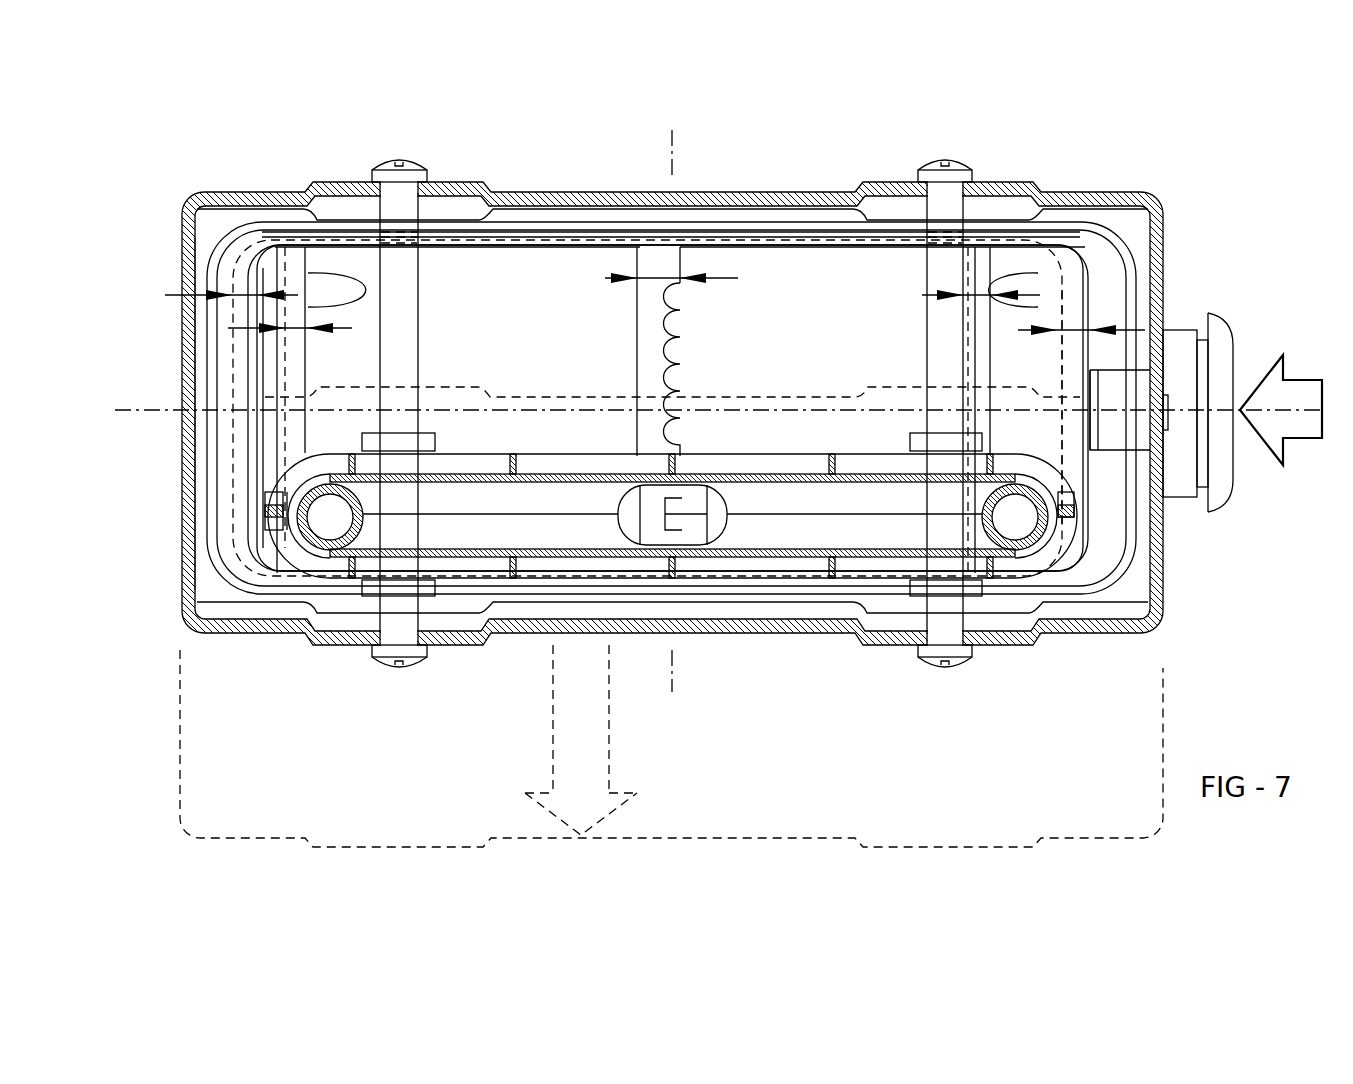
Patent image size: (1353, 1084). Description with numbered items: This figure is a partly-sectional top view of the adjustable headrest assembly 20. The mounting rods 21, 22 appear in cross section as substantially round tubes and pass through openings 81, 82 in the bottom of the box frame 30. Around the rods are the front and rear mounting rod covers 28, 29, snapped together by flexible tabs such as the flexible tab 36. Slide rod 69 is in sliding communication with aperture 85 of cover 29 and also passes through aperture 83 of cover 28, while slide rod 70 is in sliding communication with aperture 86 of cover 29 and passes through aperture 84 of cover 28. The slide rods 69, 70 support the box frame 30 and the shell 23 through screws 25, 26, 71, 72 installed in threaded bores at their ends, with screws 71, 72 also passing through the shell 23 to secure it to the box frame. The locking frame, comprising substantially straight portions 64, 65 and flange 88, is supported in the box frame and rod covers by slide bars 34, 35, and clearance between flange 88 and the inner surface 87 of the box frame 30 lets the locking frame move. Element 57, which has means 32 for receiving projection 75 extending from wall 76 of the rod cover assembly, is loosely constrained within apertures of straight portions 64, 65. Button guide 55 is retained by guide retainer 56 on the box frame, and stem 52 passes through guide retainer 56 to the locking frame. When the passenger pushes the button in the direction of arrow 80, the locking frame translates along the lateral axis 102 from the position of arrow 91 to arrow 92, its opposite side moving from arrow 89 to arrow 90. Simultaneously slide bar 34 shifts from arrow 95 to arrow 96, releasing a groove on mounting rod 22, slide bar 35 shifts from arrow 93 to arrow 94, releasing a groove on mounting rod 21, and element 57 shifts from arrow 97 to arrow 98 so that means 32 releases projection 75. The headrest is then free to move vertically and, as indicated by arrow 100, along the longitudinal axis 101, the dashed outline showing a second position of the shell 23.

The headrest assembly 20 is at (806, 179).
The mounting rod 21 is at (380, 521).
The mounting rod 22 is at (985, 491).
The shell 23 is at (563, 191).
The screw 25 is at (410, 664).
The screw 26 is at (933, 664).
The front mounting rod cover 28 is at (543, 548).
The rear mounting rod cover 29 is at (556, 490).
The box frame 30 is at (521, 208).
The means for receiving 32 is at (681, 344).
The slide bar 34 is at (1012, 252).
The slide bar 35 is at (310, 263).
The flexible tab 36 is at (272, 490).
The stem 52 is at (1105, 452).
The button guide 55 is at (1212, 513).
The guide retainer 56 is at (1180, 498).
The element 57 is at (690, 271).
The substantially straight portion 64 is at (502, 246).
The substantially straight portion 65 is at (815, 590).
The slide rod 69 is at (420, 311).
The slide rod 70 is at (927, 273).
The screw 71 is at (380, 168).
The screw 72 is at (965, 169).
The projection 75 is at (697, 500).
The wall 76 is at (710, 529).
The arrow 80 is at (1298, 381).
The opening 81 is at (366, 378).
The opening 82 is at (1055, 375).
The aperture 83 is at (436, 579).
The aperture 84 is at (918, 578).
The aperture 85 is at (428, 432).
The aperture 86 is at (918, 432).
The inner surface 87 is at (1112, 258).
The flange 88 is at (1087, 286).
The arrow 89 is at (312, 307).
The arrow 90 is at (166, 295).
The arrow 91 is at (1130, 344).
The arrow 92 is at (1018, 331).
The arrow 93 is at (352, 330).
The arrow 94 is at (228, 331).
The arrow 95 is at (1043, 312).
The arrow 96 is at (922, 296).
The arrow 97 is at (738, 279).
The arrow 98 is at (605, 279).
The arrow 100 is at (598, 753).
The longitudinal axis 101 is at (672, 160).
The lateral axis 102 is at (148, 407).